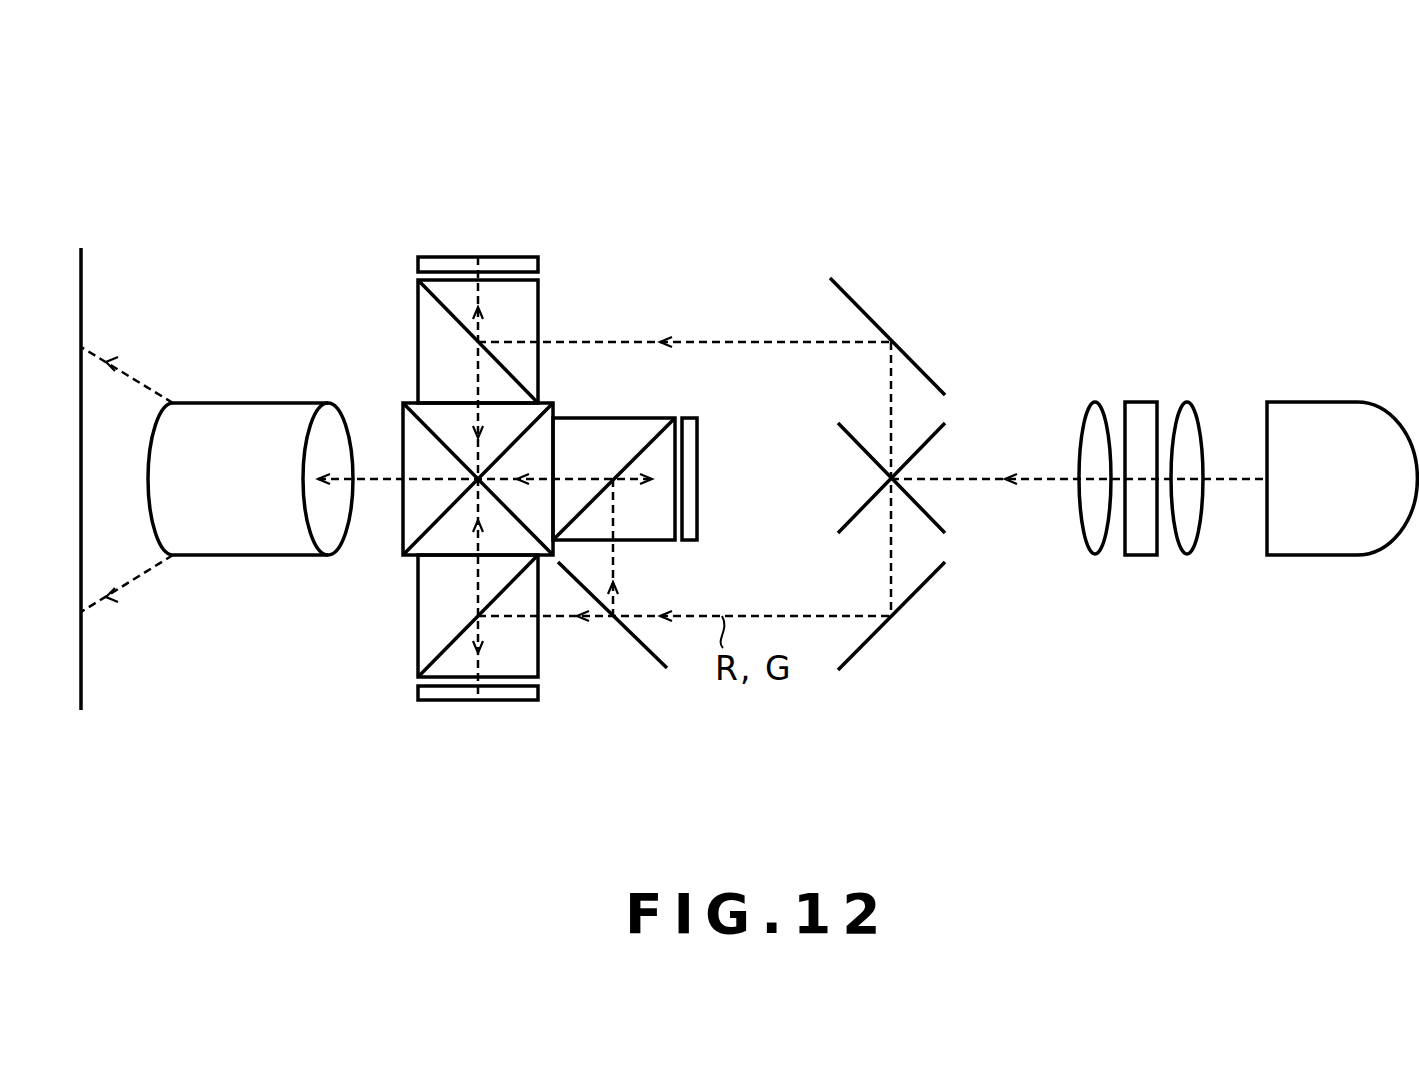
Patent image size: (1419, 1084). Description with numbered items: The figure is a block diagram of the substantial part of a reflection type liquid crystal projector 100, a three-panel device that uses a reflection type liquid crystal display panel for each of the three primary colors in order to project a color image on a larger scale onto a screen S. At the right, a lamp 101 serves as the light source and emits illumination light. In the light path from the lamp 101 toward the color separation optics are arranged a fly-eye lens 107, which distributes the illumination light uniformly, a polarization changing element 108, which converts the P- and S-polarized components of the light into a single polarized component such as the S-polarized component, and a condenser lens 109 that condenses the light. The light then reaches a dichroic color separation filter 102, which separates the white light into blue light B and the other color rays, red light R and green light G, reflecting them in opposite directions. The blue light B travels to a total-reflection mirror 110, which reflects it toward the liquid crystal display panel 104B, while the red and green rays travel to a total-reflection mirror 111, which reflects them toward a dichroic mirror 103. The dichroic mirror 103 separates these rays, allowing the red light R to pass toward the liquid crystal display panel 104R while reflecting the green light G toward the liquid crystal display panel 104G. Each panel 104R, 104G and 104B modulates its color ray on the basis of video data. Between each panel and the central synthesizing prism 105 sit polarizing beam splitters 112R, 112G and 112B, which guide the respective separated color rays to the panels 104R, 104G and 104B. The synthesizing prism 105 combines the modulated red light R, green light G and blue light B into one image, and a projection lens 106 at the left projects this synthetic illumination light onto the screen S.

The reflection type liquid crystal projector 100 is at (772, 184).
The lamp 101 is at (1337, 415).
The dichroic color separation filter 102 is at (920, 503).
The dichroic mirror 103 is at (638, 642).
The liquid crystal display panel 104B is at (478, 262).
The liquid crystal display panel 104G is at (702, 468).
The liquid crystal display panel 104R is at (478, 700).
The synthesizing prism 105 is at (402, 527).
The projection lens 106 is at (245, 555).
The fly-eye lens 107 is at (1183, 410).
The polarization changing element 108 is at (1140, 547).
The condenser lens 109 is at (1098, 410).
The total-reflection mirror 110 is at (868, 317).
The total-reflection mirror 111 is at (910, 598).
The polarizing beam splitter 112B is at (428, 310).
The polarizing beam splitter 112G is at (624, 420).
The polarizing beam splitter 112R is at (425, 652).
The screen S is at (81, 667).
The blue light B is at (755, 342).
The green light G is at (617, 580).
The red light R is at (565, 617).